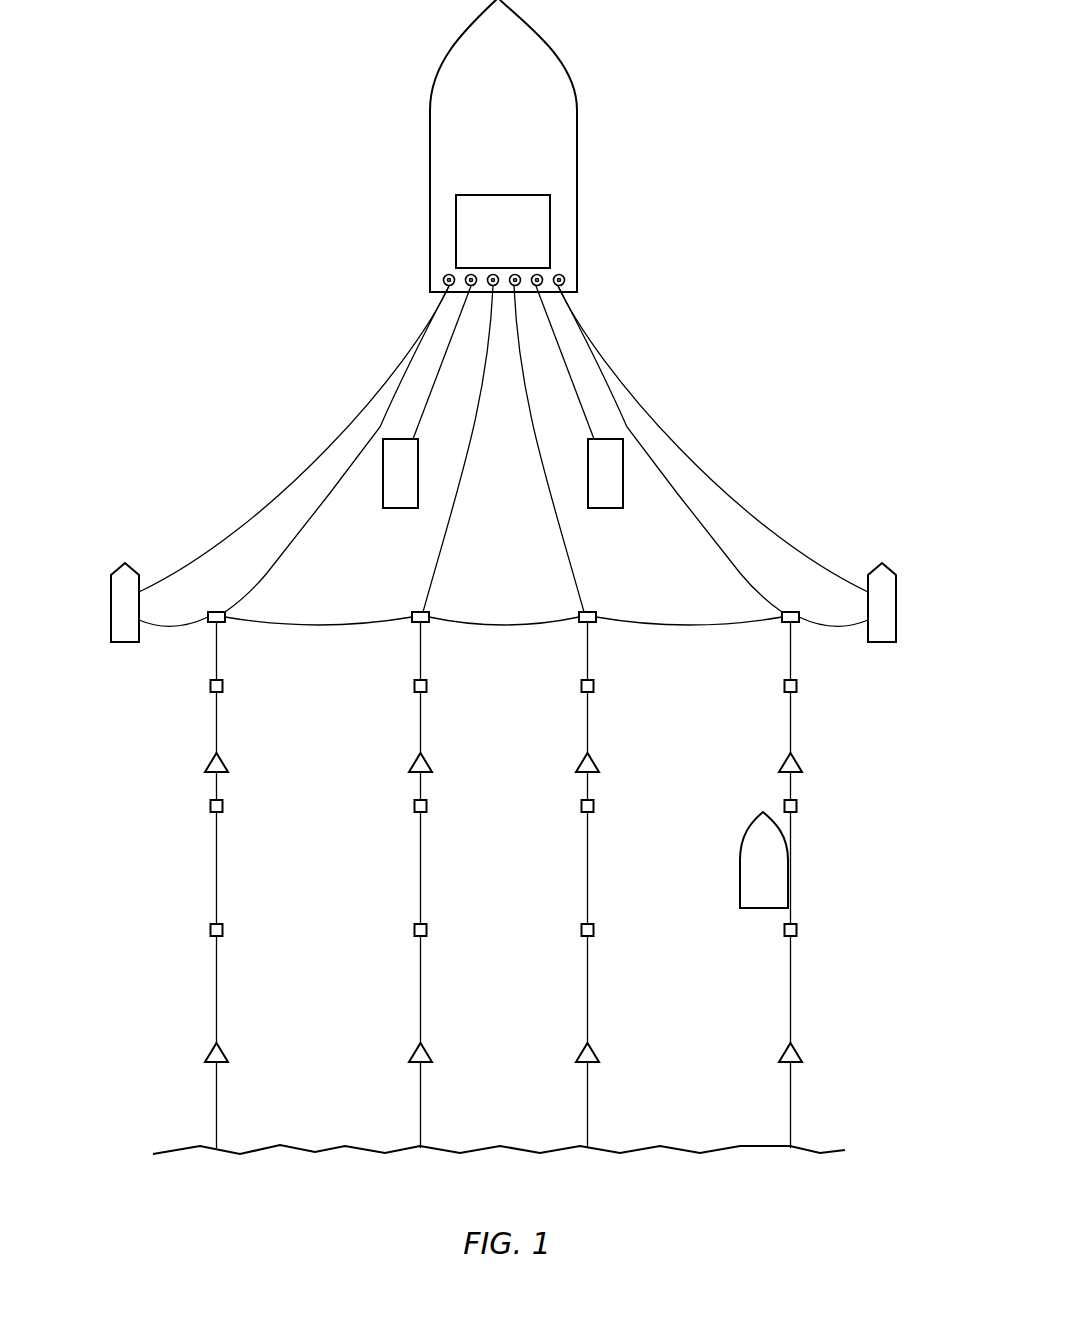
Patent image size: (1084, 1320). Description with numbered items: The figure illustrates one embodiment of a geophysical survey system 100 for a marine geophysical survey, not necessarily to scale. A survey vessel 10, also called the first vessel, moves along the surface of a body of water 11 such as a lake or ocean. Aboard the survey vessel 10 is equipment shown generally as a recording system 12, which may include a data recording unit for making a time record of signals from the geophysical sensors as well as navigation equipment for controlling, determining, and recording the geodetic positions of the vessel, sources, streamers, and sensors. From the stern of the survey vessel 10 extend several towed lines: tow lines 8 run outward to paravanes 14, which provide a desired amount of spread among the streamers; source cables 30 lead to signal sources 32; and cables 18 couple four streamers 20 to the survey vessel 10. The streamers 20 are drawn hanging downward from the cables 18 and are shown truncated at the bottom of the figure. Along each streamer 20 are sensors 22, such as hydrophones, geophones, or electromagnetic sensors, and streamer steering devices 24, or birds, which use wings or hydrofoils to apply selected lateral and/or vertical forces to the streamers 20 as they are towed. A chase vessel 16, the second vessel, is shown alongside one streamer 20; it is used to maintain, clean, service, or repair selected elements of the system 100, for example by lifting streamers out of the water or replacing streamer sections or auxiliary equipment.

The geophysical survey system 100 is at (275, 108).
The survey vessel 10 is at (517, 120).
The body of water 11 is at (692, 95).
The recording system 12 is at (500, 195).
The tow lines 8 is at (380, 396).
The paravanes 14 is at (125, 645).
The source cables 30 is at (452, 343).
The signal sources 32 is at (383, 490).
The cables 18 is at (537, 463).
The streamers 20 is at (217, 659).
The sensors 22 is at (430, 686).
The streamer steering devices 24 is at (434, 760).
The chase vessel 16 is at (779, 873).